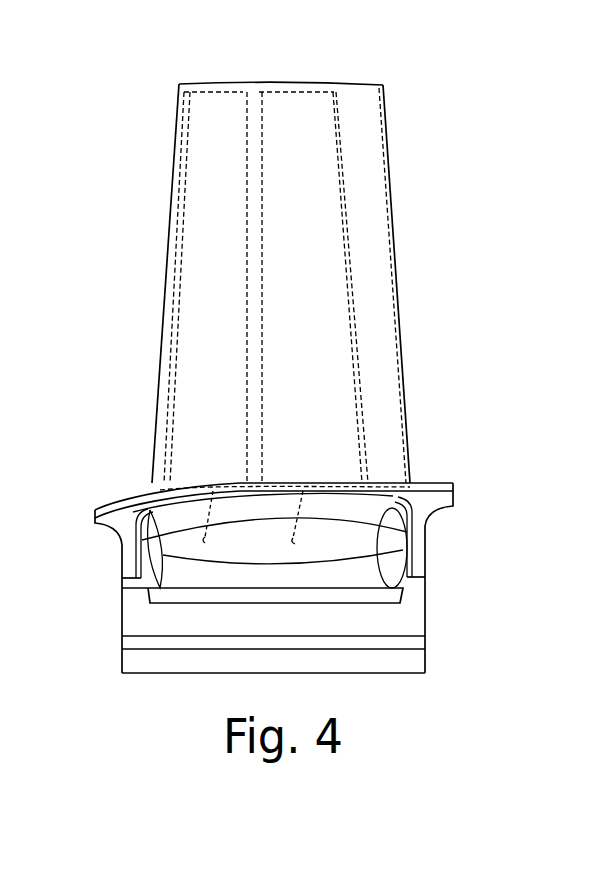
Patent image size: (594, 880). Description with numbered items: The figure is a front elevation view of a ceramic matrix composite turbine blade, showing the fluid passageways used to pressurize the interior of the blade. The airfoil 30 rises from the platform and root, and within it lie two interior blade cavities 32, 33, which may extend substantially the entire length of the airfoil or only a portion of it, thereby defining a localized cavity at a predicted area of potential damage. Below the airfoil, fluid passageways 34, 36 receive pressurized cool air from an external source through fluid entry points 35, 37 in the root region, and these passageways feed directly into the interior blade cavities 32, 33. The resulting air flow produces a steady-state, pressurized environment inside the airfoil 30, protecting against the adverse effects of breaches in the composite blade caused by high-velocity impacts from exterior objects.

The airfoil 30 is at (444, 330).
The interior blade cavity 32 is at (300, 192).
The interior blade cavity 33 is at (223, 305).
The fluid passageway 34 is at (303, 515).
The fluid entry point 35 is at (407, 552).
The fluid passageway 36 is at (203, 517).
The fluid entry point 37 is at (205, 533).